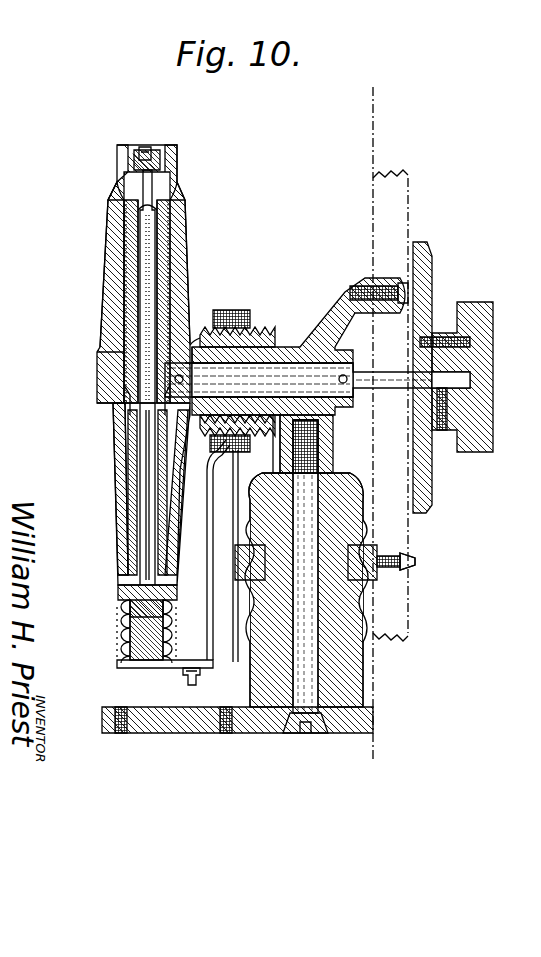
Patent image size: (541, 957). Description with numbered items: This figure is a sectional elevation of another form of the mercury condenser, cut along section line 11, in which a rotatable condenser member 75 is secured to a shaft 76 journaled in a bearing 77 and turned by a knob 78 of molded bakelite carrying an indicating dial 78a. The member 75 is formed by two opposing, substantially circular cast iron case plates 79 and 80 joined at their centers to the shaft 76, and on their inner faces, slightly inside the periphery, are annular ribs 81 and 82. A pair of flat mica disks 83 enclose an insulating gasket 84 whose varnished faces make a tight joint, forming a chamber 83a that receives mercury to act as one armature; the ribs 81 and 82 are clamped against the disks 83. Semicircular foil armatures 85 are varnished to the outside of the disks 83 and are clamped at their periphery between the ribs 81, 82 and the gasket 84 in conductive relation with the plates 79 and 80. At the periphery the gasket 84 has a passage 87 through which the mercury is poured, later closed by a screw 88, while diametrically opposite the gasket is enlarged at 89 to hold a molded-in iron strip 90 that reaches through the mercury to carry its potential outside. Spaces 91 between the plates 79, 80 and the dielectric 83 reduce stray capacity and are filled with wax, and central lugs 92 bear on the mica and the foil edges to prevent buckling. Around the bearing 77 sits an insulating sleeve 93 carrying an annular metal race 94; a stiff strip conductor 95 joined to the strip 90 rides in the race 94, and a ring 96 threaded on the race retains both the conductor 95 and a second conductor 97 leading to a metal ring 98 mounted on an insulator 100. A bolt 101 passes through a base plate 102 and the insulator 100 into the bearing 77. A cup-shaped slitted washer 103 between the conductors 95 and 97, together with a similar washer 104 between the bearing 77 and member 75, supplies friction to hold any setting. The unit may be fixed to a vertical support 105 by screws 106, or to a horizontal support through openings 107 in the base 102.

The section line 11- 11 is at (385, 87).
The rotatable condenser member 75 is at (182, 215).
The shaft 76 is at (322, 332).
The bearing 77 is at (250, 340).
The knob 78 is at (482, 302).
The indicating dial 78a is at (432, 268).
The case plate 79 is at (118, 233).
The case plate 80 is at (165, 250).
The annular rib 81 is at (117, 185).
The annular rib 82 is at (180, 188).
The mica disks 83 is at (170, 228).
The chamber 83a is at (140, 313).
The gasket 84 is at (160, 152).
The foil armatures 85 is at (128, 450).
The passage 87 is at (130, 262).
The screw 88 is at (140, 147).
The enlarged portion of gasket 89 is at (120, 650).
The metal strip 90 is at (138, 668).
The spaces 91 is at (180, 290).
The lugs 92 is at (133, 417).
The insulating sleeve 93 is at (300, 358).
The annular metal race 94 is at (226, 445).
The conductor 95 is at (213, 628).
The ring 96 is at (278, 445).
The conductor 97 is at (230, 532).
The metal ring 98 is at (408, 570).
The insulator 100 is at (345, 662).
The bolt 101 is at (302, 727).
The base plate 102 is at (192, 735).
The slitted metal washer 103 is at (232, 310).
The washer 104 is at (196, 345).
The vertical support 105 is at (409, 203).
The screws 106 is at (385, 290).
The openings 107 is at (122, 735).